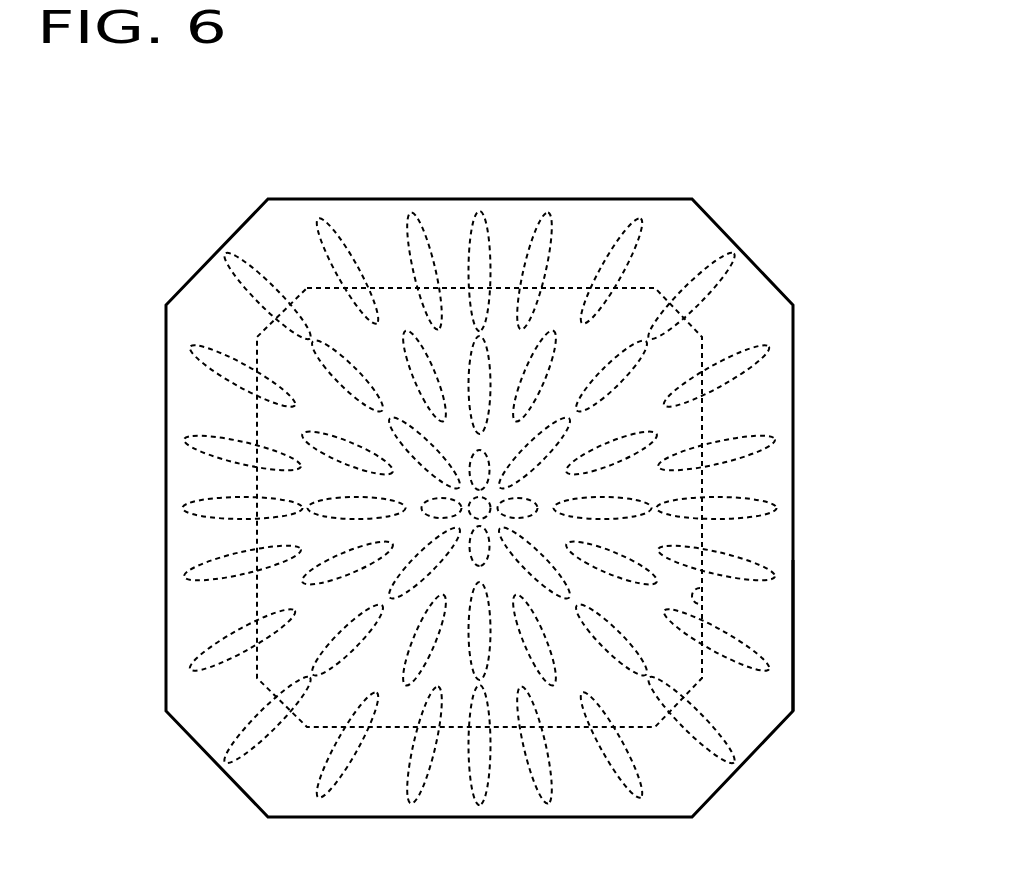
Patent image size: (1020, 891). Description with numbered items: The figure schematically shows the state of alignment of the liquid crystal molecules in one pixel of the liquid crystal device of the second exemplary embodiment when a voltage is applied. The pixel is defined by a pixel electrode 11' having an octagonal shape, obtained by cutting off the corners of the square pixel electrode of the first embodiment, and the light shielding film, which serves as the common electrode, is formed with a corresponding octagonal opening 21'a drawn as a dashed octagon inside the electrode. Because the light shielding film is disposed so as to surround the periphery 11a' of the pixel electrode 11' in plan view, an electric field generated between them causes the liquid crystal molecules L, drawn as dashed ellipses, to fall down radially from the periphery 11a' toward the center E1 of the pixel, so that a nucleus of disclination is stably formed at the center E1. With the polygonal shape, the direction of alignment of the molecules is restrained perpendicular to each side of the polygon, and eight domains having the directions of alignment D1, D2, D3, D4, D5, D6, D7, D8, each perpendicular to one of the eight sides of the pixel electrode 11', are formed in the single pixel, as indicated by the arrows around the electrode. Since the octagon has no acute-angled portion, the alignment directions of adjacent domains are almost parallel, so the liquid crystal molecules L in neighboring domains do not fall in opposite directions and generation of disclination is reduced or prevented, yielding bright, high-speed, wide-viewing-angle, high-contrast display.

The direction of alignment D1 is at (491, 138).
The direction of alignment D2 is at (145, 505).
The direction of alignment D3 is at (478, 838).
The direction of alignment D4 is at (855, 510).
The direction of alignment D5 is at (202, 230).
The direction of alignment D6 is at (198, 782).
The direction of alignment D7 is at (757, 785).
The direction of alignment D8 is at (763, 233).
The liquid crystal molecule L is at (615, 258).
The pixel electrode 11' is at (539, 508).
The periphery of pixel electrode 11a' is at (868, 635).
The octagonal opening of light shielding film 21'a is at (578, 507).
The center of pixel E1 is at (448, 521).